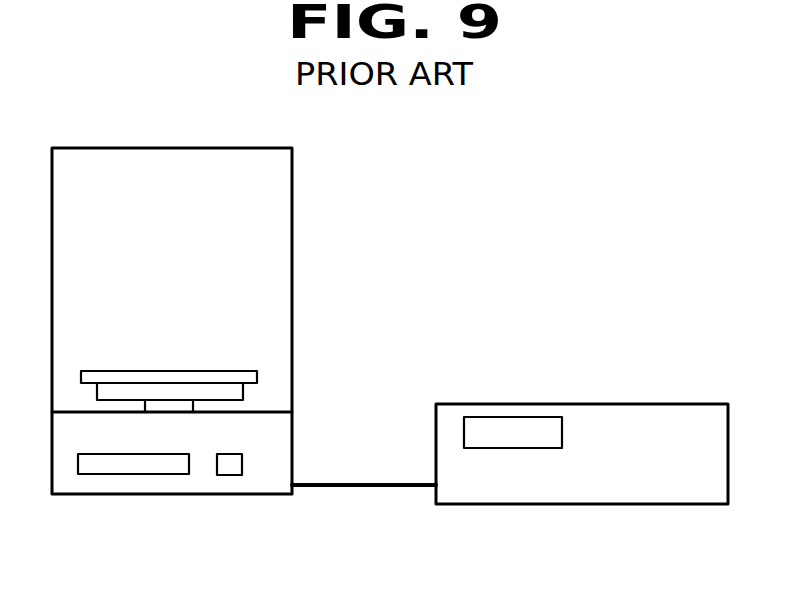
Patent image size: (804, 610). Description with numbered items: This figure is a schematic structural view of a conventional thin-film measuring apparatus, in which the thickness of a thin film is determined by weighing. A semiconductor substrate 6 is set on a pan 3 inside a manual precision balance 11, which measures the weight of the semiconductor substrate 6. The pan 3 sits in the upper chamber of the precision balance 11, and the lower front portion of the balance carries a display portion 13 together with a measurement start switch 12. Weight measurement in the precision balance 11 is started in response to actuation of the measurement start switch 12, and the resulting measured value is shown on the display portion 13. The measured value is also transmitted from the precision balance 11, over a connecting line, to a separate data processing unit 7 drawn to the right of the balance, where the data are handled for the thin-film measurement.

The manual precision balance 11 is at (292, 232).
The semiconductor substrate 6 is at (257, 376).
The pan 3 is at (243, 390).
The display portion 13 is at (145, 474).
The measurement start switch 12 is at (228, 475).
The data processing unit 7 is at (588, 415).